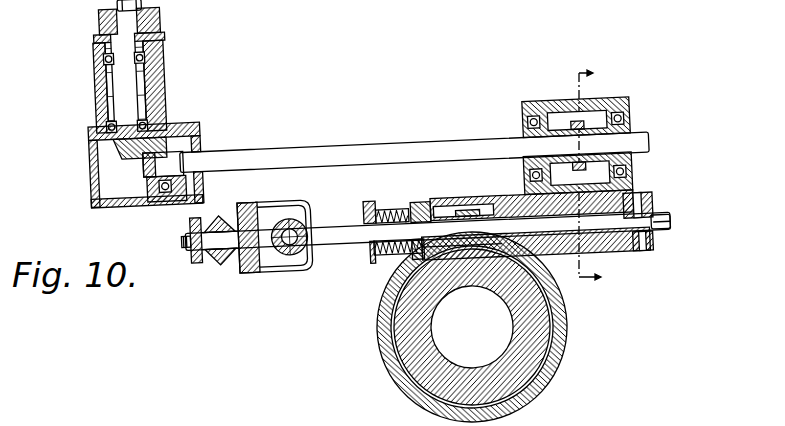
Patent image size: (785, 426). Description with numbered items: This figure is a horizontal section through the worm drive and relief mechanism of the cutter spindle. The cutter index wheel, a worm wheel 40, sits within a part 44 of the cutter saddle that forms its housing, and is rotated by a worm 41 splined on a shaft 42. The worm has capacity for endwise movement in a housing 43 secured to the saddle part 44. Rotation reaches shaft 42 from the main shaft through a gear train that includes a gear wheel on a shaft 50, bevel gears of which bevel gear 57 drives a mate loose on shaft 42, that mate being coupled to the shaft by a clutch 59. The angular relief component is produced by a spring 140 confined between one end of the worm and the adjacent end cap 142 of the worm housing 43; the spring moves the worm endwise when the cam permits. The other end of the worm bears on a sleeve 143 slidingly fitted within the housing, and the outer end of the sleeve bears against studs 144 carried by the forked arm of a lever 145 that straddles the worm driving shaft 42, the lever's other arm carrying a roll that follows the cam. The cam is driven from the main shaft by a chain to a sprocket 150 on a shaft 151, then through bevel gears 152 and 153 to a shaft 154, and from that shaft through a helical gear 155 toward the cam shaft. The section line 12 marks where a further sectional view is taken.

The section line 12— 12 is at (604, 177).
The worm wheel 40 is at (534, 336).
The worm 41 is at (472, 211).
The shaft 42 is at (350, 238).
The housing 43 is at (418, 209).
The part of the cutter saddle 44 is at (386, 342).
The shaft 50 is at (267, 259).
The bevel gear 57 is at (294, 247).
The clutch 59 is at (219, 254).
The spring 140 is at (390, 209).
The end cap 142 is at (368, 212).
The sleeve 143 is at (616, 259).
The studs 144 is at (637, 210).
The lever 145 is at (657, 216).
The sprocket 150 is at (105, 14).
The shaft 151 is at (134, 91).
The bevel gear 152 is at (120, 135).
The bevel gear 153 is at (157, 184).
The shaft 154 is at (337, 147).
The helical gear 155 is at (575, 128).